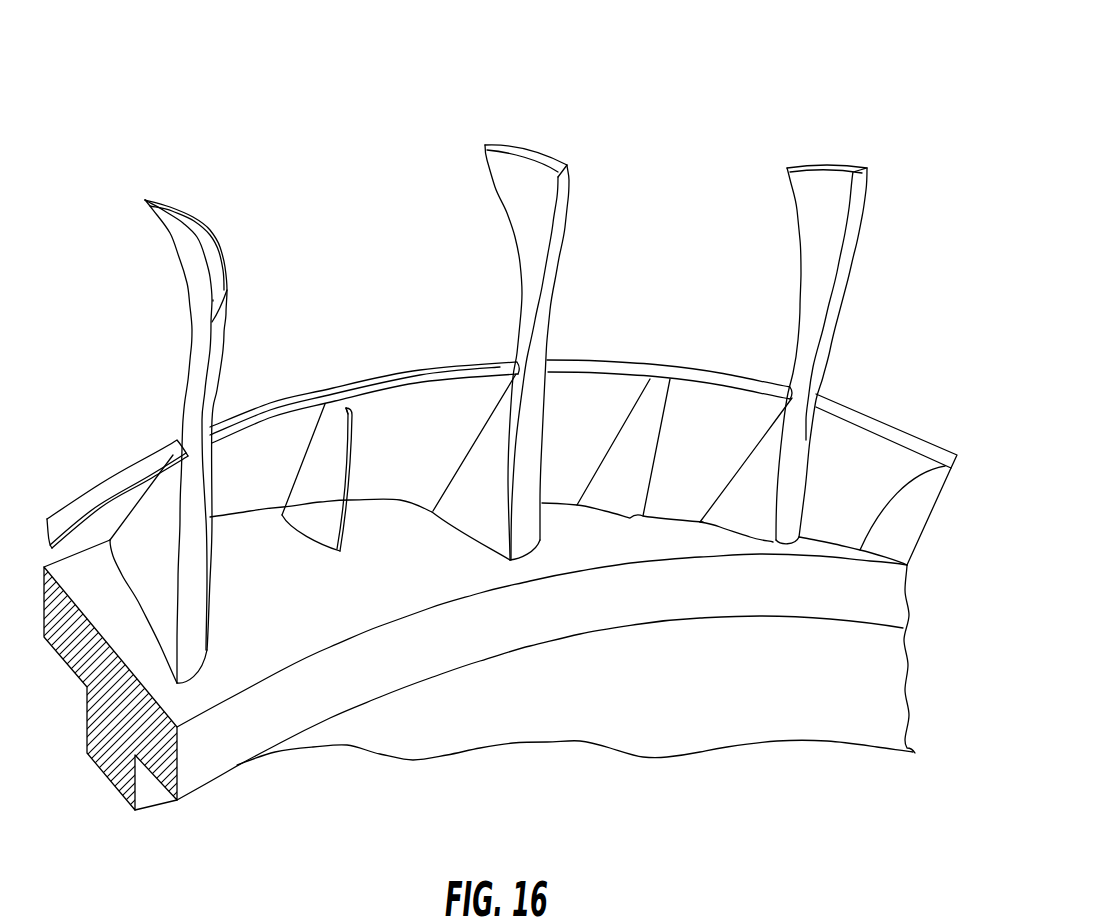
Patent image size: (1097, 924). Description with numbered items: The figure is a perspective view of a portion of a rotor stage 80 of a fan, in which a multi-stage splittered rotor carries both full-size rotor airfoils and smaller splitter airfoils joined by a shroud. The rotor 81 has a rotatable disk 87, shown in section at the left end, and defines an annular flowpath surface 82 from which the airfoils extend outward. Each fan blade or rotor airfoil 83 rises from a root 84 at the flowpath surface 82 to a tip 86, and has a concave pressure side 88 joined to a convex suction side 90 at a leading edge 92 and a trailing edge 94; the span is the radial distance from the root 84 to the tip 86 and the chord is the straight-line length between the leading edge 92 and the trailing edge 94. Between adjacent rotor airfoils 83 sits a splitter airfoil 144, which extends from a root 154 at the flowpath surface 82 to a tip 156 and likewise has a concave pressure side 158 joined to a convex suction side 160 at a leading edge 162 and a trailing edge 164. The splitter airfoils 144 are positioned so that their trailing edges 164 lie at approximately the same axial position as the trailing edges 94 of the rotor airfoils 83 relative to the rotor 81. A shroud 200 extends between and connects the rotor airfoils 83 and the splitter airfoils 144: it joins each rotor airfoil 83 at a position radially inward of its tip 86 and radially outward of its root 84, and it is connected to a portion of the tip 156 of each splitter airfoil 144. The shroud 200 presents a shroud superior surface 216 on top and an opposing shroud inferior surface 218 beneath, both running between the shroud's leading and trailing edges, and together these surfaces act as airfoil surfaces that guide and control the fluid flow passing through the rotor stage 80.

The rotor stage 80 is at (882, 62).
The rotor 81 is at (88, 804).
The flowpath surface 82 is at (80, 562).
The rotor airfoil 83 is at (543, 387).
The root 84 is at (212, 653).
The tip 86 is at (213, 257).
The rotatable disk 87 is at (180, 802).
The pressure side 88 is at (197, 363).
The suction side 90 is at (218, 343).
The leading edge 92 is at (228, 430).
The trailing edge 94 is at (173, 255).
The splitter airfoil 144 is at (419, 421).
The root 154 is at (330, 462).
The tip 156 is at (345, 406).
The pressure side 158 is at (310, 477).
The suction side 160 is at (355, 432).
The leading edge 162 is at (357, 478).
The trailing edge 164 is at (305, 460).
The shroud 200 is at (883, 413).
The shroud superior surface 216 is at (612, 356).
The shroud inferior surface 218 is at (592, 382).